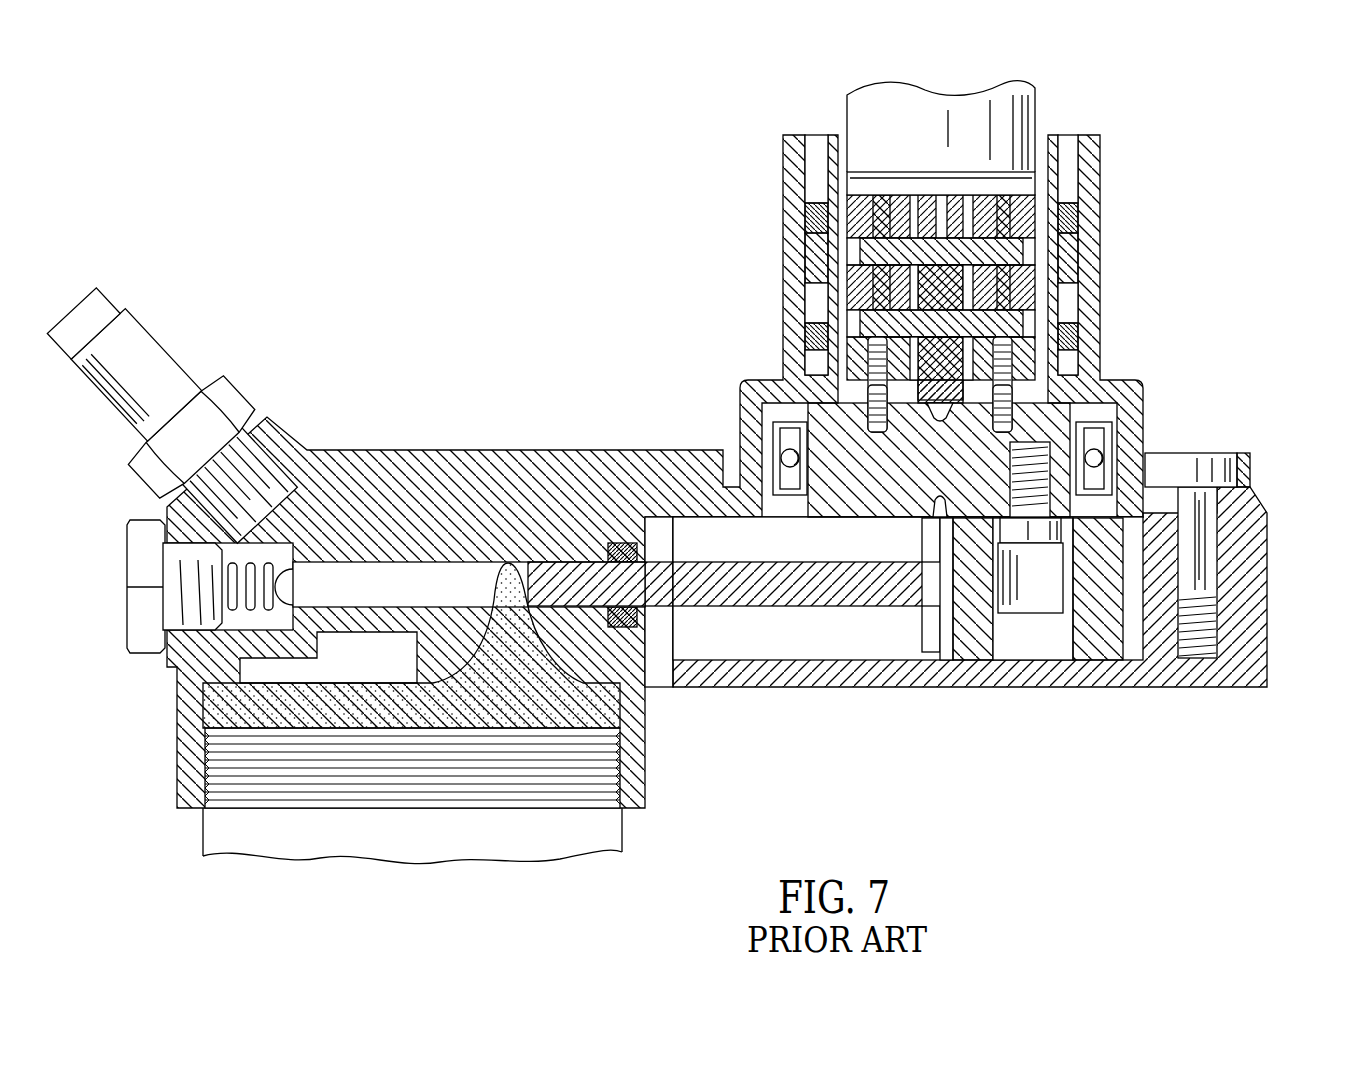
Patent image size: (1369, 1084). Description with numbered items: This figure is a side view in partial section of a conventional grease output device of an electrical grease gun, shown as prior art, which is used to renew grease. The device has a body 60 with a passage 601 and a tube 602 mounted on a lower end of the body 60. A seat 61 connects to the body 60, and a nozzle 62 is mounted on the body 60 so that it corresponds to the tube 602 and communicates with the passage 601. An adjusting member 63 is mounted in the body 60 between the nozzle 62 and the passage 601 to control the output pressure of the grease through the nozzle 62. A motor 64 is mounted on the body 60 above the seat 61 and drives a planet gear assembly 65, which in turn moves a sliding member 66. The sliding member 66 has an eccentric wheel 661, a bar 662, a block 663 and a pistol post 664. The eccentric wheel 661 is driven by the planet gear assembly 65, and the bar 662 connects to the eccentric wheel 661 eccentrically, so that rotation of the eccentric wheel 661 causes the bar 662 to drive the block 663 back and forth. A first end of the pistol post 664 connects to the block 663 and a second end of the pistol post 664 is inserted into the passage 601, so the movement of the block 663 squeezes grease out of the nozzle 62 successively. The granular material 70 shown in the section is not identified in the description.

The body 60 is at (637, 775).
The passage 601 is at (378, 612).
The tube 602 is at (607, 833).
The seat 61 is at (1250, 640).
The nozzle 62 is at (93, 328).
The adjusting member 63 is at (137, 615).
The motor 64 is at (1025, 112).
The planet gear assembly 65 is at (1113, 264).
The sliding member 66 is at (882, 625).
The eccentric wheel 661 is at (827, 433).
The bar 662 is at (1036, 595).
The block 663 is at (1100, 650).
The pistol post 664 is at (797, 597).
The granular material 70 is at (507, 617).